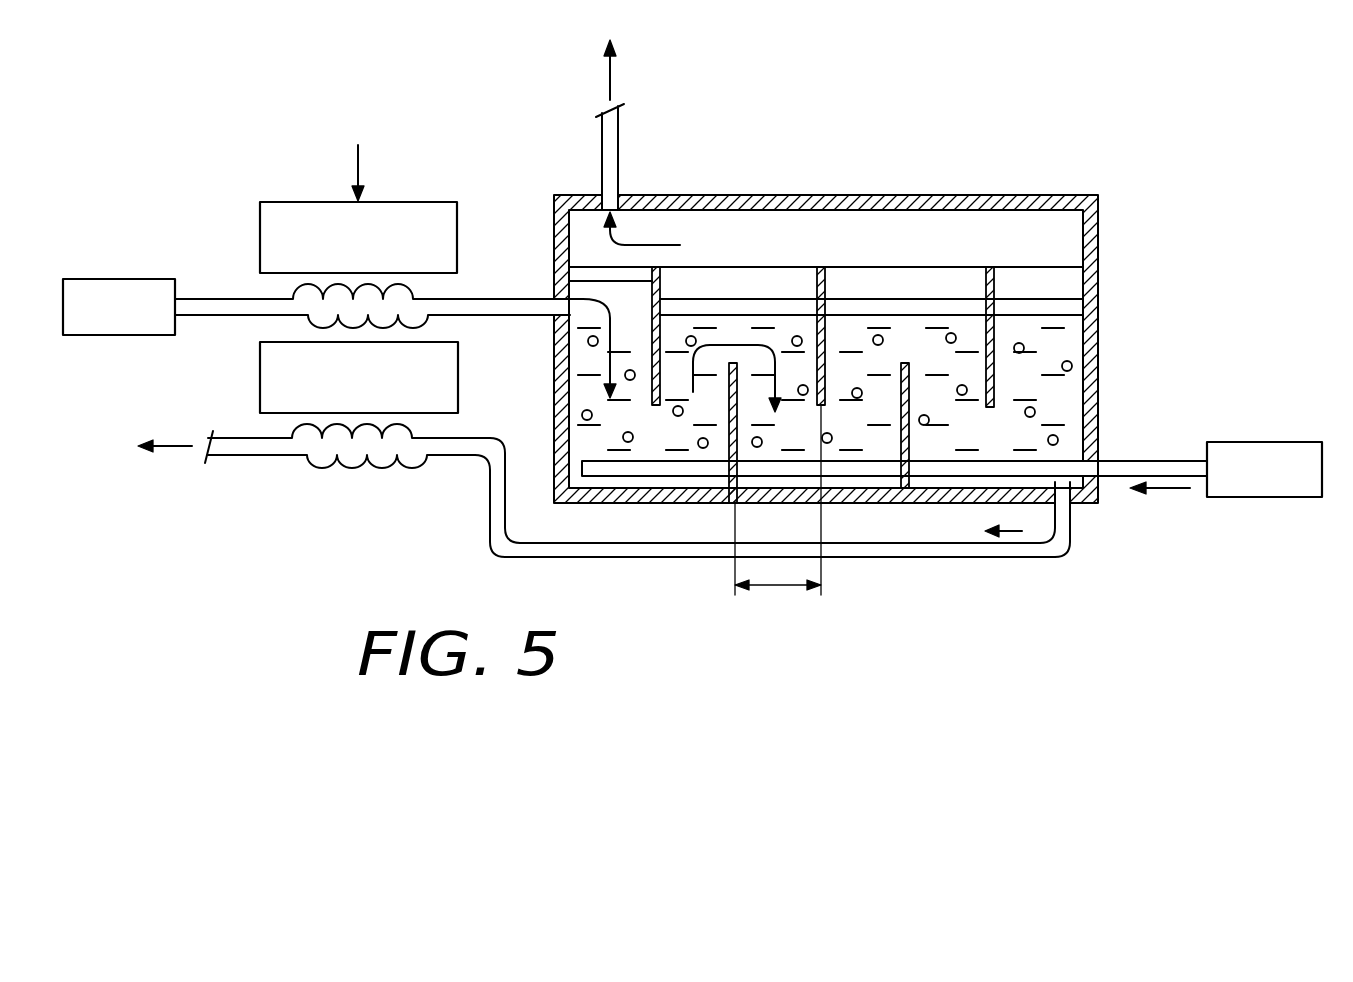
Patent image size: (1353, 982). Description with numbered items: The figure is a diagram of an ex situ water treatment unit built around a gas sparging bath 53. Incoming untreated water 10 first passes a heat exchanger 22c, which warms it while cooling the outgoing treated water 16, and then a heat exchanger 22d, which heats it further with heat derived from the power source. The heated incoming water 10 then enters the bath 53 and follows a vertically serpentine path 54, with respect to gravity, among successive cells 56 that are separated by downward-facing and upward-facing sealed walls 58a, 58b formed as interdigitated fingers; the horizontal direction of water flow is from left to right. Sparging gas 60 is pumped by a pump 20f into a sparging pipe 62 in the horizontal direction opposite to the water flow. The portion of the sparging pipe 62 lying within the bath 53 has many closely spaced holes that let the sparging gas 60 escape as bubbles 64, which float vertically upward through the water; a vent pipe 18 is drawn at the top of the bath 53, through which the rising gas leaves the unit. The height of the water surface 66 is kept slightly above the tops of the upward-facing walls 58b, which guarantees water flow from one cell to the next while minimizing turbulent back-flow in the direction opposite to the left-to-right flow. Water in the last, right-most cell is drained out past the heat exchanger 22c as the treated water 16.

The incoming untreated water 10 is at (234, 300).
The treated water 16 is at (233, 445).
The vapor vent pipe 18 is at (606, 140).
The pump 20f is at (82, 278).
The heat exchanger 22c is at (259, 374).
The heat exchanger 22d is at (260, 213).
The gas sparging bath 53 is at (1098, 198).
The serpentine path 54 is at (733, 340).
The cells 56 is at (788, 589).
The downward-facing sealed wall 58a is at (832, 256).
The upward-facing sealed wall 58b is at (903, 363).
The sparging gas 60 is at (1165, 468).
The sparging pipe 62 is at (1122, 461).
The bubbles 64 is at (703, 448).
The water surface 66 is at (1072, 307).